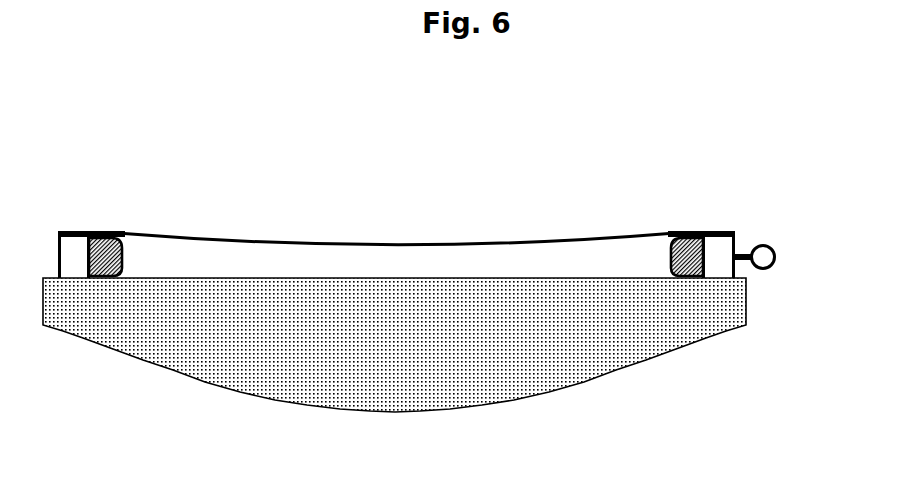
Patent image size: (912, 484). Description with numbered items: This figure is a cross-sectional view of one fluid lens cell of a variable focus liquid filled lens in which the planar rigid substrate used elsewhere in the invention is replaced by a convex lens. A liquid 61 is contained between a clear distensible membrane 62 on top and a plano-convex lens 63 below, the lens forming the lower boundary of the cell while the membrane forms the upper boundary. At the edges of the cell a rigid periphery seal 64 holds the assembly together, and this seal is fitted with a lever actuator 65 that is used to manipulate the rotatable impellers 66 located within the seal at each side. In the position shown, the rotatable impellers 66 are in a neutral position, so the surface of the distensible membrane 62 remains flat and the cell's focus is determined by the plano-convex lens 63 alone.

The liquid 61 is at (328, 268).
The clear distensible membrane 62 is at (505, 240).
The plano-convex lens 63 is at (718, 310).
The rigid periphery seal 64 is at (723, 248).
The lever actuator 65 is at (772, 249).
The rotatable impellers 66 is at (470, 258).